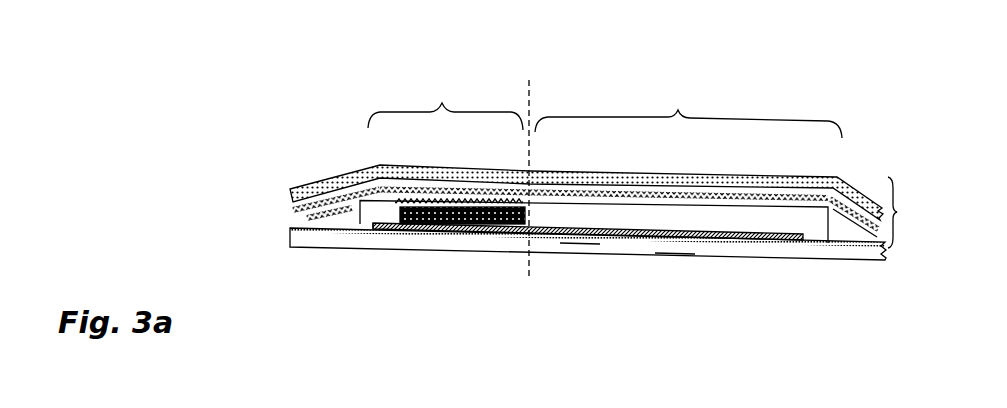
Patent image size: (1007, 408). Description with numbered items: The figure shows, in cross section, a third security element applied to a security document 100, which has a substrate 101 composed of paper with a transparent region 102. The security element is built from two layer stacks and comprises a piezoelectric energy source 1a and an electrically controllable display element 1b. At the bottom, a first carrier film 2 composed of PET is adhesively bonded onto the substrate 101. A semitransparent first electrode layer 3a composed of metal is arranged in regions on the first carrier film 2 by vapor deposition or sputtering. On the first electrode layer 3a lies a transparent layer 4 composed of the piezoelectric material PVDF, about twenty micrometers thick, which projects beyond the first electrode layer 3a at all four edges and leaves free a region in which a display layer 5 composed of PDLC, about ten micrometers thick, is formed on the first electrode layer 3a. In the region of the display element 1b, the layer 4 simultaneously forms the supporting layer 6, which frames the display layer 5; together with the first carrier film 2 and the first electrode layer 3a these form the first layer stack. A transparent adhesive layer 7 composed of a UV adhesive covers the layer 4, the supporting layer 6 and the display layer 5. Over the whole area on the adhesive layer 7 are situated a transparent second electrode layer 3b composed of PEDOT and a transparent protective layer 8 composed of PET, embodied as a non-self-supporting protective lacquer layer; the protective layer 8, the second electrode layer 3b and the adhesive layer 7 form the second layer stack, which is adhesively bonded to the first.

The security document 100 is at (897, 253).
The piezoelectric energy source 1a is at (688, 111).
The electrically controllable display element 1b is at (445, 103).
The transparent protective layer 8 is at (290, 194).
The transparent adhesive layer 7 is at (678, 184).
The second electrode layer 3b is at (292, 206).
The first electrode layer 3a is at (747, 244).
The transparent layer composed of piezoelectric material 4 is at (776, 222).
The supporting layer 6 is at (368, 221).
The display layer 5 is at (433, 225).
The first carrier film 2 is at (820, 249).
The substrate 101 is at (572, 247).
The transparent region 102 is at (669, 250).